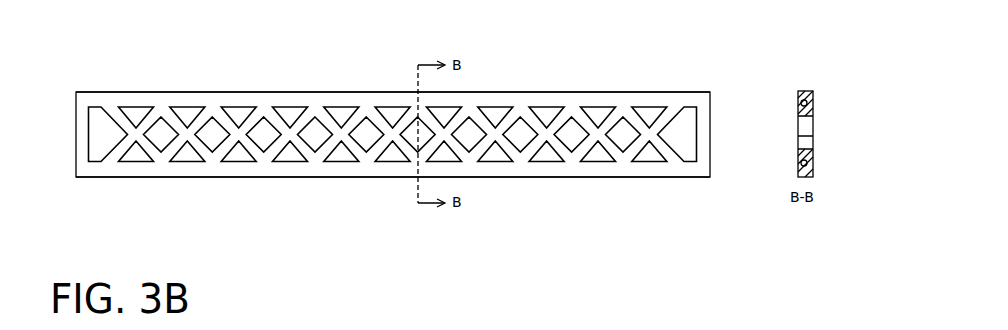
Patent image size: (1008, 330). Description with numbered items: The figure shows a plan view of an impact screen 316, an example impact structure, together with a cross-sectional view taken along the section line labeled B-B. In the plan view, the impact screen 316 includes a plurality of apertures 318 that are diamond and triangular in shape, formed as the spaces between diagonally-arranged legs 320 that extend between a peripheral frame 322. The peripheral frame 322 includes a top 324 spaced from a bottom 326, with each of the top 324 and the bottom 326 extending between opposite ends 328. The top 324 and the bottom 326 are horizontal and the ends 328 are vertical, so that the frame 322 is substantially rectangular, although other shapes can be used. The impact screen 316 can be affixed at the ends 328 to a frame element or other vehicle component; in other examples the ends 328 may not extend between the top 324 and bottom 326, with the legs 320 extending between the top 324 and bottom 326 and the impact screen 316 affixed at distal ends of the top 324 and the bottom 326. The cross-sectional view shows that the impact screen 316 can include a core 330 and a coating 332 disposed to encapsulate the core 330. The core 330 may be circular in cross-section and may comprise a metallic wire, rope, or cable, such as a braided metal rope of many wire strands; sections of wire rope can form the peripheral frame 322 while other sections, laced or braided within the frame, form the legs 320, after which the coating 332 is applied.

The impact screen 316 is at (155, 57).
The apertures 318 is at (314, 131).
The legs 320 is at (178, 123).
The peripheral frame 322 is at (294, 170).
The top 324 is at (626, 103).
The bottom 326 is at (637, 170).
The ends 328 is at (85, 142).
The core 330 is at (802, 101).
The coating 332 is at (798, 111).